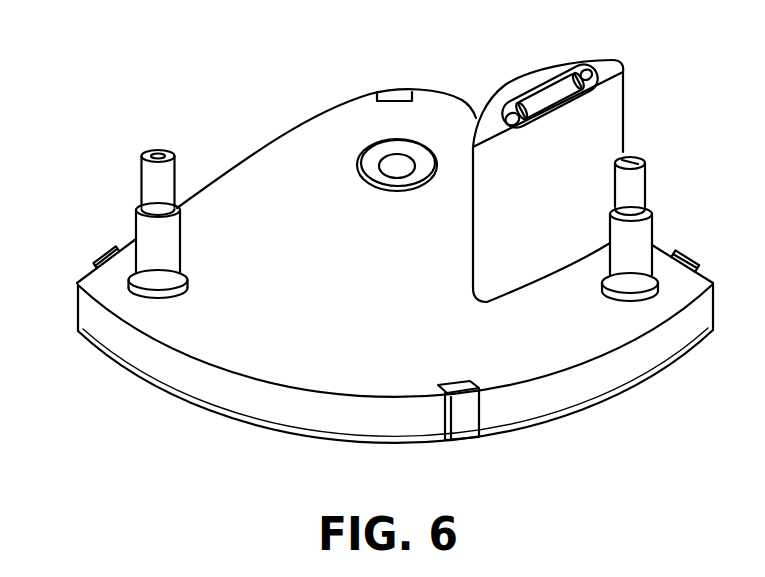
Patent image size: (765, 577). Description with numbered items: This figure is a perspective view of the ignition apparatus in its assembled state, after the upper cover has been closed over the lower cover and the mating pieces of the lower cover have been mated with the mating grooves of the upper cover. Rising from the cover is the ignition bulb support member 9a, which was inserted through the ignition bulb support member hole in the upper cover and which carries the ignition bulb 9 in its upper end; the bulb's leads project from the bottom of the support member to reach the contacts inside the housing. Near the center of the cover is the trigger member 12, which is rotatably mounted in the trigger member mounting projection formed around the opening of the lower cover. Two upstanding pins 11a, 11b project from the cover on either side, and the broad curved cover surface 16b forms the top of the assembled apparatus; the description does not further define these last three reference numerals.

The ignition bulb 9 is at (541, 103).
The ignition bulb support member 9a is at (601, 125).
The positioning pin 11a is at (150, 193).
The positioning pin 11b is at (632, 192).
The trigger member 12 is at (370, 157).
The cover plate 16b is at (225, 210).